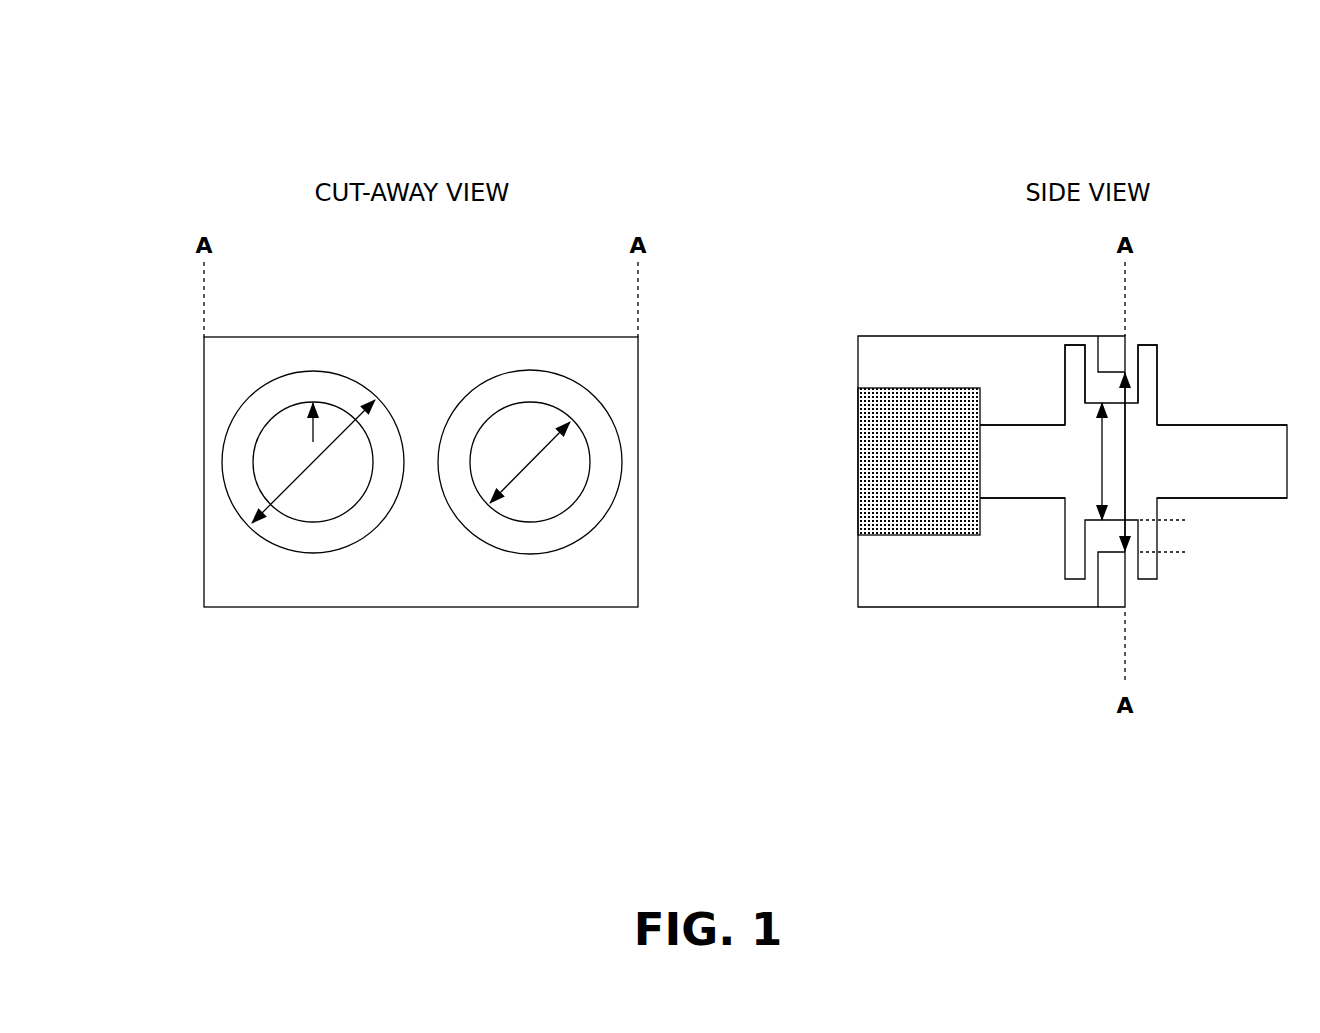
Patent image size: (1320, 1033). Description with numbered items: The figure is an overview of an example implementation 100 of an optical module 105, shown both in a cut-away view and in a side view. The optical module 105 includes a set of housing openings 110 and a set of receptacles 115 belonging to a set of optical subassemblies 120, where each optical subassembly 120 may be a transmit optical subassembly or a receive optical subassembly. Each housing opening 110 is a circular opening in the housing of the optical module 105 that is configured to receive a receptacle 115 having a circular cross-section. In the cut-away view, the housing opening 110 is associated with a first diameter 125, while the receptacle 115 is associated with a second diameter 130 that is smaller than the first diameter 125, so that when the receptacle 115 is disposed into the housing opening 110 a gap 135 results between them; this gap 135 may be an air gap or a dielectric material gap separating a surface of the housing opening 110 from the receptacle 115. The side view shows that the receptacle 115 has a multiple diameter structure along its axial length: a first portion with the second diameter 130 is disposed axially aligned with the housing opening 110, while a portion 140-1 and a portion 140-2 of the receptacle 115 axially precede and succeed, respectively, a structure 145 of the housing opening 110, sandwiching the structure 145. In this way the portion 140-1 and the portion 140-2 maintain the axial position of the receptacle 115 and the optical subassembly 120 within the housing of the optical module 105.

The example implementation 100 is at (218, 53).
The optical module 105 is at (218, 607).
The housing opening 110 is at (510, 369).
The receptacle 115 is at (484, 449).
The optical subassembly 120 is at (902, 473).
The first diameter 125 is at (302, 506).
The second diameter 130 is at (525, 486).
The gap 135 is at (313, 370).
The portion 140-1 is at (1052, 352).
The portion 140-2 is at (1173, 348).
The structure 145 is at (1105, 327).